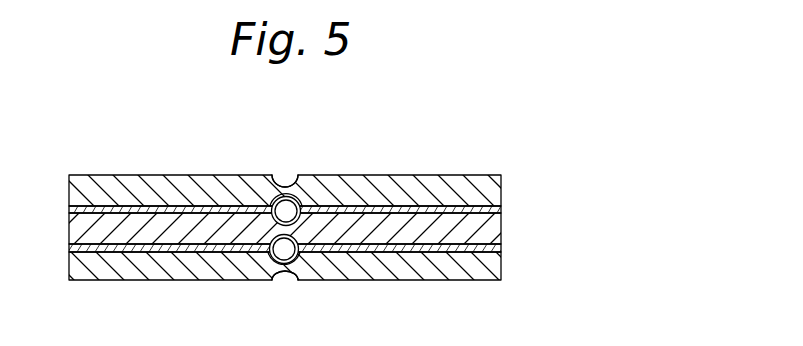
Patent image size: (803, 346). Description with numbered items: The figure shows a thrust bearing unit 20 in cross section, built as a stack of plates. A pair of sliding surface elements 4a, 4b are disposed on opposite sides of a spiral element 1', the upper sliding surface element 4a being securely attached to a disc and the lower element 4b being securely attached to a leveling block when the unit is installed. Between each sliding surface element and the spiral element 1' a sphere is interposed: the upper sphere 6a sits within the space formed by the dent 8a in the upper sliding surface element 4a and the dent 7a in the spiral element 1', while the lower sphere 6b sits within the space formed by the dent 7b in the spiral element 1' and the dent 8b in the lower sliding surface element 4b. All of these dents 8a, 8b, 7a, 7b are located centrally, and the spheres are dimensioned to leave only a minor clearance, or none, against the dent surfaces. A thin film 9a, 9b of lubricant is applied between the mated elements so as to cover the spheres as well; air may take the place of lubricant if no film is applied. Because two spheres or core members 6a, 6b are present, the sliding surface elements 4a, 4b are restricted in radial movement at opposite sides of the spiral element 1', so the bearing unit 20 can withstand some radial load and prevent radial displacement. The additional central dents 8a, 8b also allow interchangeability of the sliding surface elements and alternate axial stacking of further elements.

The upper sliding surface element 4a is at (467, 190).
The lower sliding surface element 4b is at (447, 270).
The thin film of lubricant 9a is at (104, 210).
The thin film of lubricant 9b is at (104, 247).
The spiral element 1' is at (299, 204).
The dent 8a is at (288, 183).
The dent 8b is at (282, 279).
The sphere 6a is at (300, 200).
The sphere 6b is at (300, 260).
The dent 7a is at (290, 209).
The dent 7b is at (290, 250).
The thrust bearing unit 20 is at (547, 225).